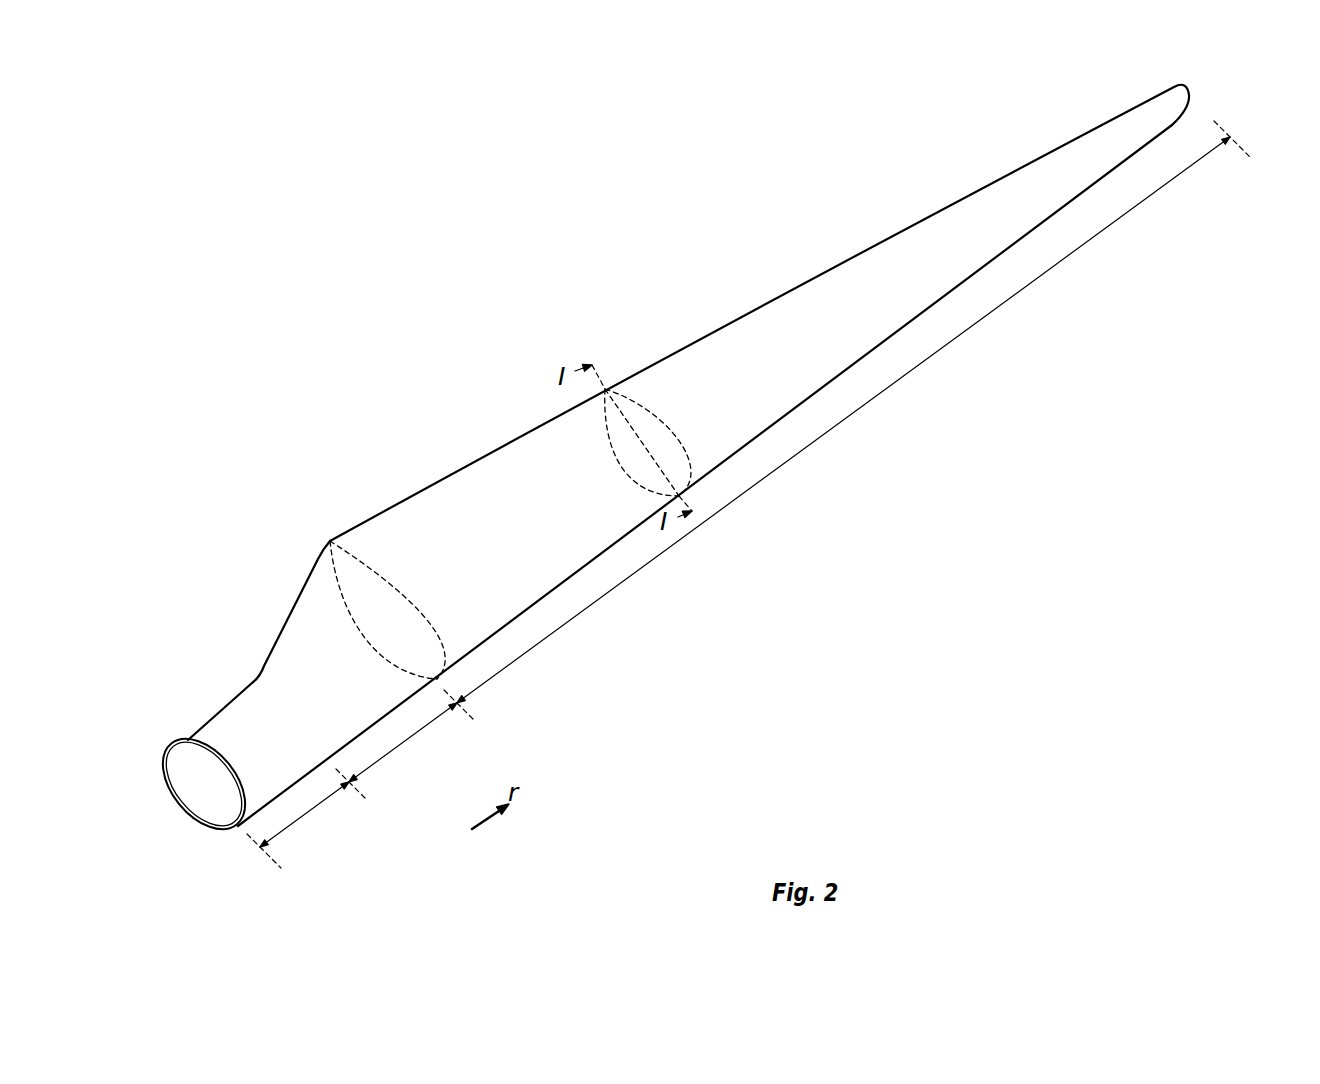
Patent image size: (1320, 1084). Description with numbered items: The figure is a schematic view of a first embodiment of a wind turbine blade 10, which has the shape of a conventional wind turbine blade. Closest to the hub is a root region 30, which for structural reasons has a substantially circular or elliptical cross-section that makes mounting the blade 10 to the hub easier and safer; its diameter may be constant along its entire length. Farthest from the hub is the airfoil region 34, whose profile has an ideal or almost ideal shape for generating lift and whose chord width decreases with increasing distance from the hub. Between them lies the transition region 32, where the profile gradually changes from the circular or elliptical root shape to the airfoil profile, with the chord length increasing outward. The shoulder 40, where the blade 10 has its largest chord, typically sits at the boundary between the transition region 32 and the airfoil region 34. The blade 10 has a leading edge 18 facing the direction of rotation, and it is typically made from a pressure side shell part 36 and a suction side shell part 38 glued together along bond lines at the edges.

The wind turbine blade 10 is at (493, 319).
The leading edge 18 is at (877, 347).
The root region 30 is at (307, 815).
The transition region 32 is at (403, 743).
The airfoil region 34 is at (765, 478).
The pressure side shell part 36 is at (198, 740).
The suction side shell part 38 is at (170, 748).
The shoulder 40 is at (328, 542).